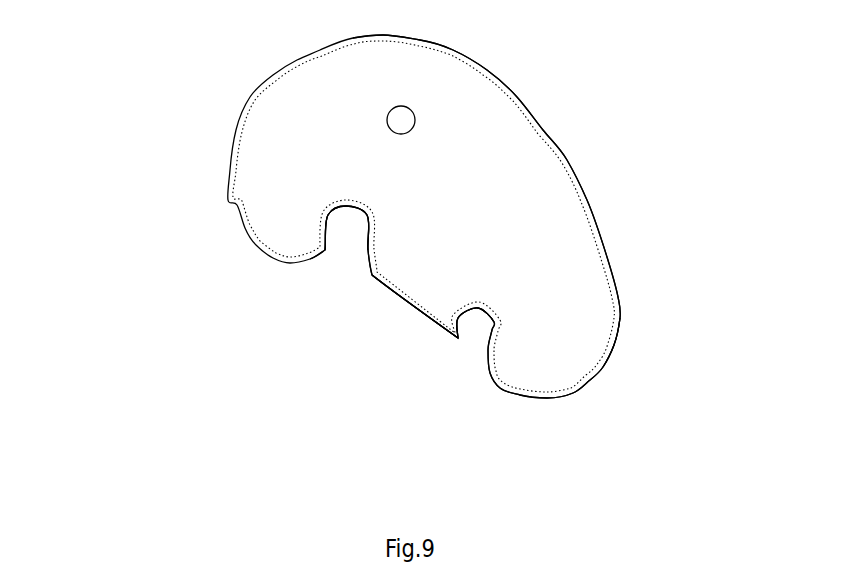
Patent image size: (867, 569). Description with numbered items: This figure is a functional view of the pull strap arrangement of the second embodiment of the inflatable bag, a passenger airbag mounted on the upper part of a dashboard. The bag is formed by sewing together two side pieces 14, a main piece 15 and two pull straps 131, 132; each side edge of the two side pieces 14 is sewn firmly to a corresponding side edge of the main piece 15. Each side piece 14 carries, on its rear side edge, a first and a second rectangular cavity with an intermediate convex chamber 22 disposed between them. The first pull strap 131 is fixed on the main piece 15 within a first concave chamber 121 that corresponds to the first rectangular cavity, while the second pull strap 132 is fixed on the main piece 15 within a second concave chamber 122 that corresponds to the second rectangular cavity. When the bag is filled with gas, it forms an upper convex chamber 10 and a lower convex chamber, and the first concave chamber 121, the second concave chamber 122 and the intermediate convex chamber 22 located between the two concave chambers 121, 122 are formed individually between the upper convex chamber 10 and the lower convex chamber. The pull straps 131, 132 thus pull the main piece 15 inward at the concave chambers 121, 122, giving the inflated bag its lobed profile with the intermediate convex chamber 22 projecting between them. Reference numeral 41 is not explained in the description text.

The upper convex chamber 10 is at (272, 215).
The side piece 14 is at (550, 205).
The main piece 15 is at (517, 97).
The first concave chamber 121 is at (353, 220).
The second concave chamber 122 is at (490, 330).
The first pull strap 131 is at (335, 248).
The second pull strap 132 is at (457, 347).
The intermediate convex chamber 22 is at (438, 265).
The lobe portion 41 is at (537, 380).